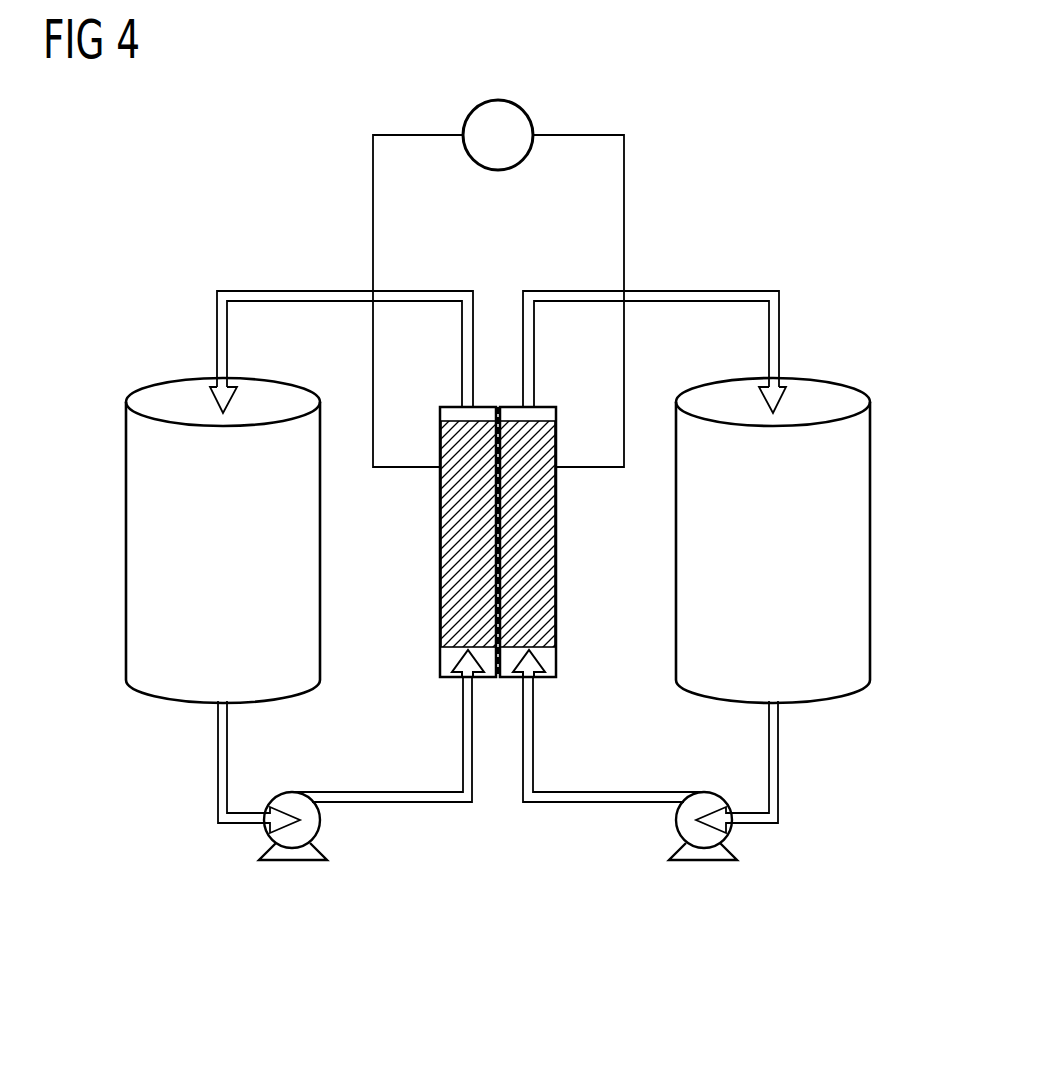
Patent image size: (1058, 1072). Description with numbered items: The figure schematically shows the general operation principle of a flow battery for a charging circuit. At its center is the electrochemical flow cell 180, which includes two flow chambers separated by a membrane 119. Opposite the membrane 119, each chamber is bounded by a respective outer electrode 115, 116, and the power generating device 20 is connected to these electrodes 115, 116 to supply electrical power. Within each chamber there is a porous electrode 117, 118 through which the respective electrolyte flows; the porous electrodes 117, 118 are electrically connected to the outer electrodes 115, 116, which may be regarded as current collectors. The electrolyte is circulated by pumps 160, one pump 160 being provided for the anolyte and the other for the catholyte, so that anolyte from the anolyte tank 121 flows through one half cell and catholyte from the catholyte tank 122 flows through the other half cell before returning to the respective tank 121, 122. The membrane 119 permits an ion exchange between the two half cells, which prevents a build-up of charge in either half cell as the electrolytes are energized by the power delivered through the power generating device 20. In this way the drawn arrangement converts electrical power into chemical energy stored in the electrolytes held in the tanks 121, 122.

The power generating device 20 is at (520, 108).
The electrode 115 is at (426, 542).
The electrode 116 is at (570, 542).
The porous electrode 117 is at (446, 553).
The porous electrode 118 is at (551, 550).
The membrane 119 is at (497, 471).
The anolyte tank 121 is at (126, 563).
The catholyte tank 122 is at (870, 518).
The pump 160 is at (292, 849).
The electrochemical flow cell 180 is at (514, 578).